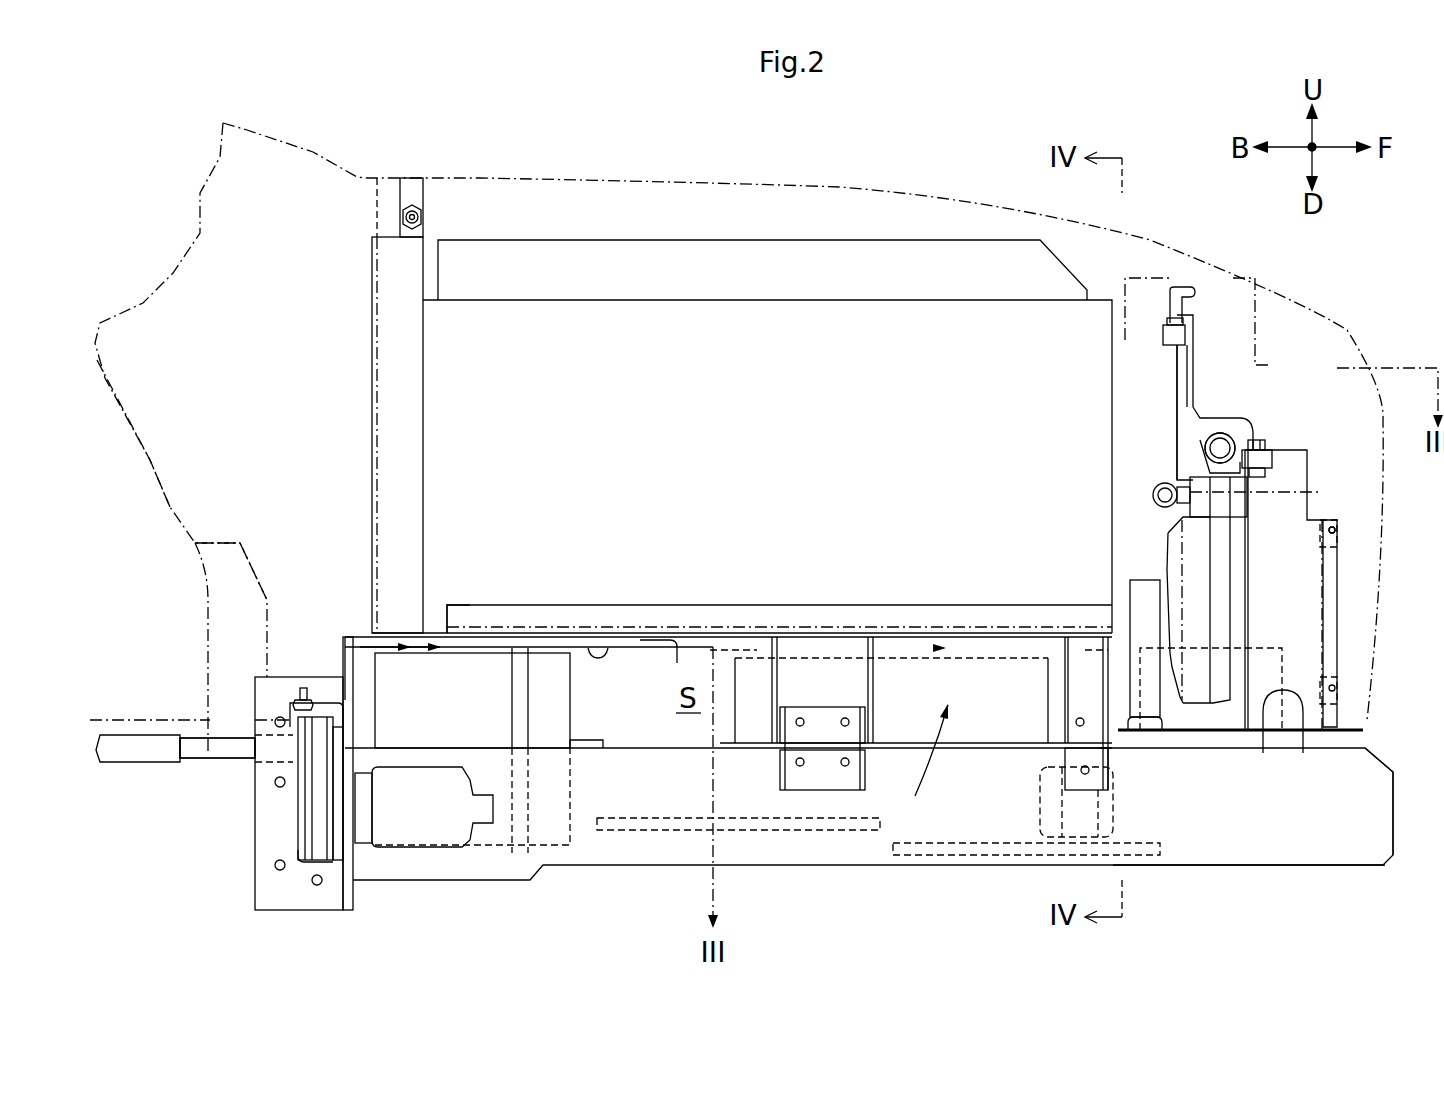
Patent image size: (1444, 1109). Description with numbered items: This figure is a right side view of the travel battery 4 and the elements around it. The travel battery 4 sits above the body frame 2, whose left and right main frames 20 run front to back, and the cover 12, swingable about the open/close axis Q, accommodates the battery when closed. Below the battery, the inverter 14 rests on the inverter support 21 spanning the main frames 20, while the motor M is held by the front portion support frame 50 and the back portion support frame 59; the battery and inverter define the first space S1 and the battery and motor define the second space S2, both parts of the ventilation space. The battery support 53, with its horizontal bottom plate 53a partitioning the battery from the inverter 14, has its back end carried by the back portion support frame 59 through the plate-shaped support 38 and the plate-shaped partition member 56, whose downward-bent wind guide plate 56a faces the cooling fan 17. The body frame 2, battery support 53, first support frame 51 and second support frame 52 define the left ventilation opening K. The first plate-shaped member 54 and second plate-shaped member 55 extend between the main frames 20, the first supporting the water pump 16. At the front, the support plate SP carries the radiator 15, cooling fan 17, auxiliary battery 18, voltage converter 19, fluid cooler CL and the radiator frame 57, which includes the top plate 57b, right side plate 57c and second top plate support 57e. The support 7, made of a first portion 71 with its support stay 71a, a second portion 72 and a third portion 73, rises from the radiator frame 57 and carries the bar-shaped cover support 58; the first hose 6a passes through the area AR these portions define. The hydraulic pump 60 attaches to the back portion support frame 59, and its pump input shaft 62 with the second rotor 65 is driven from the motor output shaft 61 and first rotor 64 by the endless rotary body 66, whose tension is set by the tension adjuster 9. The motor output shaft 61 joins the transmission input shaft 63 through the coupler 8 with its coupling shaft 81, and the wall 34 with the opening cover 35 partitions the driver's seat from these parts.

The body frame 2 is at (1395, 792).
The travel battery 4 is at (977, 305).
The first hose 6a is at (1203, 453).
The support 7 is at (1200, 330).
The coupler 8 is at (217, 748).
The tension adjuster 9 is at (303, 693).
The cover 12 is at (808, 187).
The inverter 14 is at (757, 715).
The radiator 15 is at (1236, 580).
The water pump 16 is at (1140, 805).
The cooling fan 17 is at (1170, 530).
The auxiliary battery 18 is at (1280, 660).
The voltage converter 19 is at (1340, 555).
The main frame 20 is at (1313, 867).
The inverter support 21 is at (975, 740).
The wall 34 is at (170, 510).
The opening cover 35 is at (207, 590).
The plate-shaped support 38 is at (335, 640).
The front portion support frame 50 is at (490, 862).
The first support frame 51 is at (1090, 640).
The second support frame 52 is at (812, 685).
The battery support 53 is at (942, 615).
The bottom plate 53a is at (437, 625).
The first plate-shaped member 54 is at (960, 855).
The second plate-shaped member 55 is at (762, 835).
The plate-shaped partition member 56 is at (590, 655).
The wind guide plate 56a is at (673, 650).
The radiator frame 57 is at (1314, 452).
The top plate 57b is at (1258, 450).
The right side plate 57c is at (1283, 585).
The second top plate support 57e is at (1258, 472).
The cover support 58 is at (1188, 290).
The back portion support frame 59 is at (352, 890).
The hydraulic pump 60 is at (440, 830).
The motor output shaft 61 is at (340, 745).
The pump input shaft 62 is at (338, 818).
The transmission input shaft 63 is at (130, 745).
The first rotor 64 is at (338, 723).
The second rotor 65 is at (300, 853).
The endless rotary body 66 is at (322, 860).
The first portion 71 is at (1106, 373).
The support stay 71a is at (1178, 370).
The second portion 72 is at (1220, 418).
The third portion 73 is at (1232, 436).
The coupling shaft 81 is at (180, 757).
The open/close axis Q is at (412, 178).
The motor M is at (543, 663).
The first space S1 is at (943, 648).
The second space S2 is at (360, 646).
The left ventilation opening K is at (917, 762).
The area AR is at (1205, 440).
The fluid cooler CL is at (1137, 592).
The support plate SP is at (1273, 730).